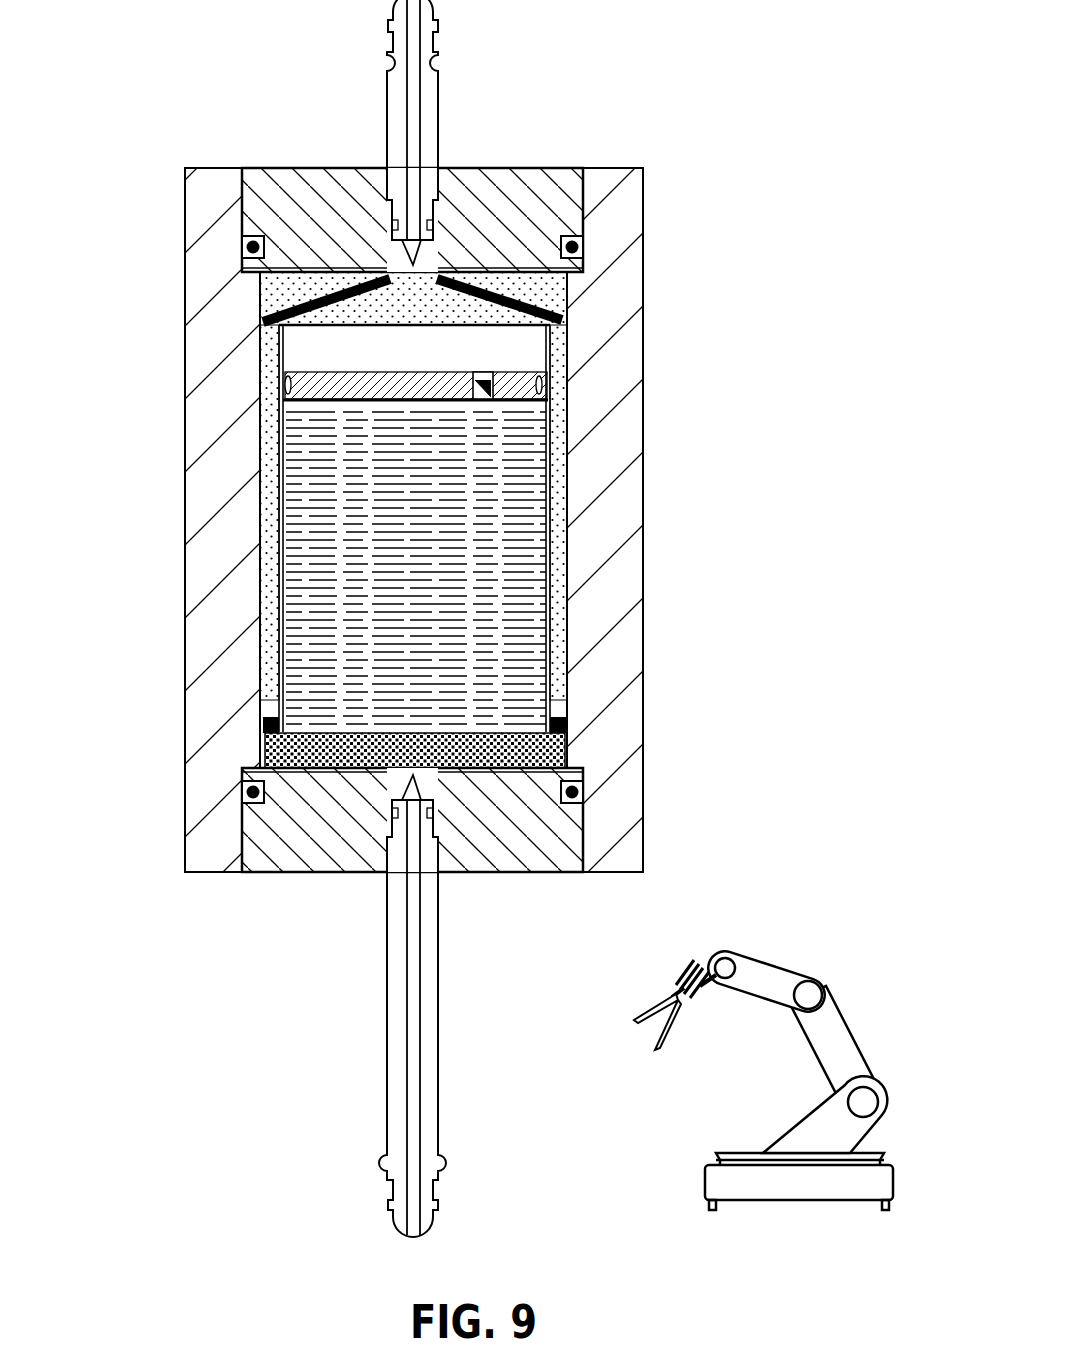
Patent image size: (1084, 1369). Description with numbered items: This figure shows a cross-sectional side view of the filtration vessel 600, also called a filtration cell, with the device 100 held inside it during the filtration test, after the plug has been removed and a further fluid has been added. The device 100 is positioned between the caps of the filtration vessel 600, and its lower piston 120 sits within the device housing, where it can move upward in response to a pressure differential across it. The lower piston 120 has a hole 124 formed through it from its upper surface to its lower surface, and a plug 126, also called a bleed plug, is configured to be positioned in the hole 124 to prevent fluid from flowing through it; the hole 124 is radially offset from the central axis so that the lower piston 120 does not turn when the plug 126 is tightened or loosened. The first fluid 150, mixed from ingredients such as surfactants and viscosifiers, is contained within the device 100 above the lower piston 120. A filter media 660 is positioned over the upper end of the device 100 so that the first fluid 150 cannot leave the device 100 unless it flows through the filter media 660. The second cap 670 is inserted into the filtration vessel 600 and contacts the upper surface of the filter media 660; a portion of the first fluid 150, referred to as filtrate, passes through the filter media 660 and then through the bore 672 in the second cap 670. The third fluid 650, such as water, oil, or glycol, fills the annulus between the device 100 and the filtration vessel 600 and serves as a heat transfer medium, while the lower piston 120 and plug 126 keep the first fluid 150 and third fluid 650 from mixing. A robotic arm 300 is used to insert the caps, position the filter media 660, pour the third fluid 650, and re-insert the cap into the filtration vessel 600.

The filtration vessel 600 is at (228, 106).
The second cap 670 is at (313, 873).
The bore 672 is at (413, 1010).
The third fluid 650 is at (265, 513).
The filter media 660 is at (265, 748).
The device 100 is at (558, 446).
The lower piston 120 is at (520, 340).
The hole 124 is at (615, 339).
The plug 126 is at (495, 358).
The first fluid 150 is at (477, 527).
The robotic arm 300 is at (780, 932).